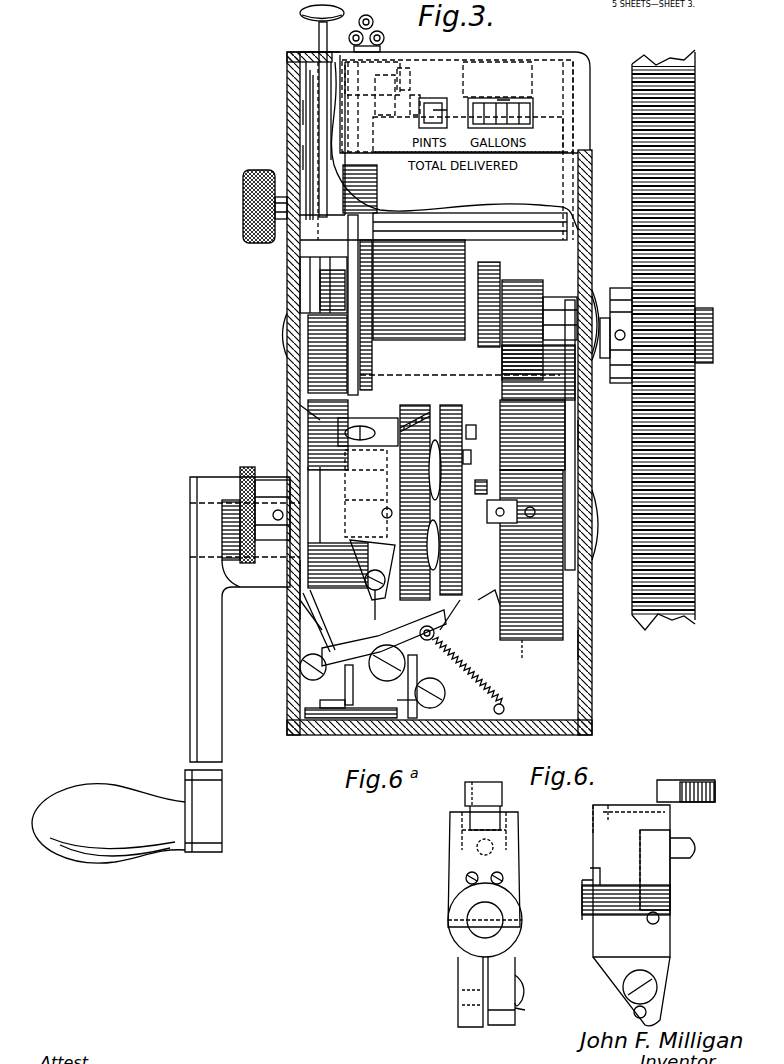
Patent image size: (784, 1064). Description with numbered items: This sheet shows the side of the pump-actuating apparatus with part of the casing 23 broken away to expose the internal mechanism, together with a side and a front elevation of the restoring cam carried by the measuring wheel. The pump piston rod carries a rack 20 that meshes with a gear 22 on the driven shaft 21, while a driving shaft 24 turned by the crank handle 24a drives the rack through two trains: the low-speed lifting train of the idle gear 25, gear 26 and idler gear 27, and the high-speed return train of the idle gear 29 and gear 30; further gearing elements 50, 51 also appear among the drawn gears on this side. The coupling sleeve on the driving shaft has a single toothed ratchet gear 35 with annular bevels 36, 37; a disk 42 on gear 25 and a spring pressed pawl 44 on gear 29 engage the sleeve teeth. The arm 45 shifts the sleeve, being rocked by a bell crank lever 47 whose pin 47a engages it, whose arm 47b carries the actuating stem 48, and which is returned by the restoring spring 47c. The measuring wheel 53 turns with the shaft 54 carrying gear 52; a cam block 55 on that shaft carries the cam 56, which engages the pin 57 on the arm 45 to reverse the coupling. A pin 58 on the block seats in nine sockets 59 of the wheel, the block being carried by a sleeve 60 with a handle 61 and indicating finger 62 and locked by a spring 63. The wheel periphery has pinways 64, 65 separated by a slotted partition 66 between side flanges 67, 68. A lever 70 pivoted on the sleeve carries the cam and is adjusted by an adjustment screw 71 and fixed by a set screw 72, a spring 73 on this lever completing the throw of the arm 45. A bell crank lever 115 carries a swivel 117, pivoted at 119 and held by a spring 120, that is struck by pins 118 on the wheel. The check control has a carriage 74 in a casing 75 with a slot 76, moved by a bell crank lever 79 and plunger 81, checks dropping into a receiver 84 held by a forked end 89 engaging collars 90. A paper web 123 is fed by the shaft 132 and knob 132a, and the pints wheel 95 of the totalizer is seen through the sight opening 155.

In FIG. 3, the rack 20 is at (677, 167).
In FIG. 3, the driven shaft 21 is at (285, 345).
In FIG. 3, the gear 22 is at (673, 293).
In FIG. 3, the casing 23 is at (590, 432).
In FIG. 3, the driving shaft 24 is at (597, 540).
In FIG. 3, the crank handle 24a is at (203, 722).
In FIG. 3, the gear 25 is at (298, 600).
In FIG. 3, the gear 26 is at (327, 345).
In FIG. 3, the intermediate idler gear 27 is at (300, 405).
In FIG. 3, the gear 29 is at (531, 658).
In FIG. 3, the gear 30 is at (530, 300).
In FIG. 3, the single toothed ratchet gear 35 is at (508, 98).
In FIG. 3, the annular bevel 36 is at (368, 493).
In FIG. 3, the annular bevel 37 is at (480, 480).
In FIG. 3, the disk 42 is at (326, 621).
In FIG. 3, the spring pressed pawl 44 is at (490, 606).
In FIG. 3, the arm 45 is at (440, 670).
In FIG. 3, the bell crank lever 47 is at (373, 657).
In FIG. 3, the pin 47a is at (474, 621).
In FIG. 3, the arm 47b is at (347, 665).
In FIG. 3, the restoring spring 47c is at (509, 690).
In FIG. 3, the actuating stem 48 is at (300, 265).
In FIG. 3, the gear 50 is at (500, 280).
In FIG. 3, the bearing 51 is at (580, 300).
In FIG. 3, the gear 52 is at (590, 640).
In FIG. 3, the wheel 53 is at (425, 418).
In FIG. 3, the shaft 54 is at (511, 511).
In FIG. 3, the cam block 55 is at (305, 470).
In FIG. 6a, the cam block 55 is at (452, 885).
In FIG. 6, the cam block 55 is at (673, 883).
In FIG. 3, the cam 56 is at (395, 412).
In FIG. 6a, the cam 56 is at (478, 782).
In FIG. 6, the cam 56 is at (690, 782).
In FIG. 3, the pin 57 is at (358, 573).
In FIG. 3, the pin 58 is at (435, 500).
In FIG. 6a, the pin 58 is at (495, 845).
In FIG. 6, the pin 58 is at (690, 846).
In FIG. 3, the sockets 59 is at (429, 502).
In FIG. 3, the sleeve 60 is at (282, 550).
In FIG. 6a, the sleeve 60 is at (508, 905).
In FIG. 6, the sleeve 60 is at (593, 905).
In FIG. 3, the handle 61 is at (245, 470).
In FIG. 3, the indicating finger 62 is at (290, 480).
In FIG. 3, the spring 63 is at (300, 560).
In FIG. 3, the pinway 64 is at (477, 434).
In FIG. 3, the pinway 65 is at (471, 464).
In FIG. 3, the partition 66 is at (458, 658).
In FIG. 3, the side flange 67 is at (407, 628).
In FIG. 3, the side flange 68 is at (469, 621).
In FIG. 3, the lever 70 is at (374, 610).
In FIG. 6a, the lever 70 is at (465, 972).
In FIG. 6a, the adjustment screw 71 is at (525, 1012).
In FIG. 6, the adjustment screw 71 is at (648, 1010).
In FIG. 6a, the set screw 72 is at (522, 980).
In FIG. 6, the set screw 72 is at (660, 980).
In FIG. 3, the spring 73 is at (300, 430).
In FIG. 6a, the spring 73 is at (478, 858).
In FIG. 6, the spring 73 is at (595, 848).
In FIG. 3, the reciprocatory carriage 74 is at (303, 112).
In FIG. 3, the casing 75 is at (312, 88).
In FIG. 3, the slot 76 is at (300, 55).
In FIG. 3, the bell crank lever 79 is at (303, 155).
In FIG. 3, the plunger 81 is at (345, 12).
In FIG. 3, the receiver 84 is at (330, 735).
In FIG. 3, the forked end 89 is at (378, 735).
In FIG. 3, the collars 90 is at (402, 735).
In FIG. 3, the wheel 95 is at (432, 100).
In FIG. 3, the bell crank lever 115 is at (355, 268).
In FIG. 3, the swivel 117 is at (580, 410).
In FIG. 3, the pins 118 is at (580, 472).
In FIG. 3, the pivot 119 is at (454, 305).
In FIG. 3, the spring 120 is at (538, 372).
In FIG. 3, the paper web 123 is at (470, 276).
In FIG. 3, the shaft 132 is at (333, 197).
In FIG. 3, the knob 132a is at (250, 172).
In FIG. 3, the sight opening 155 is at (435, 110).